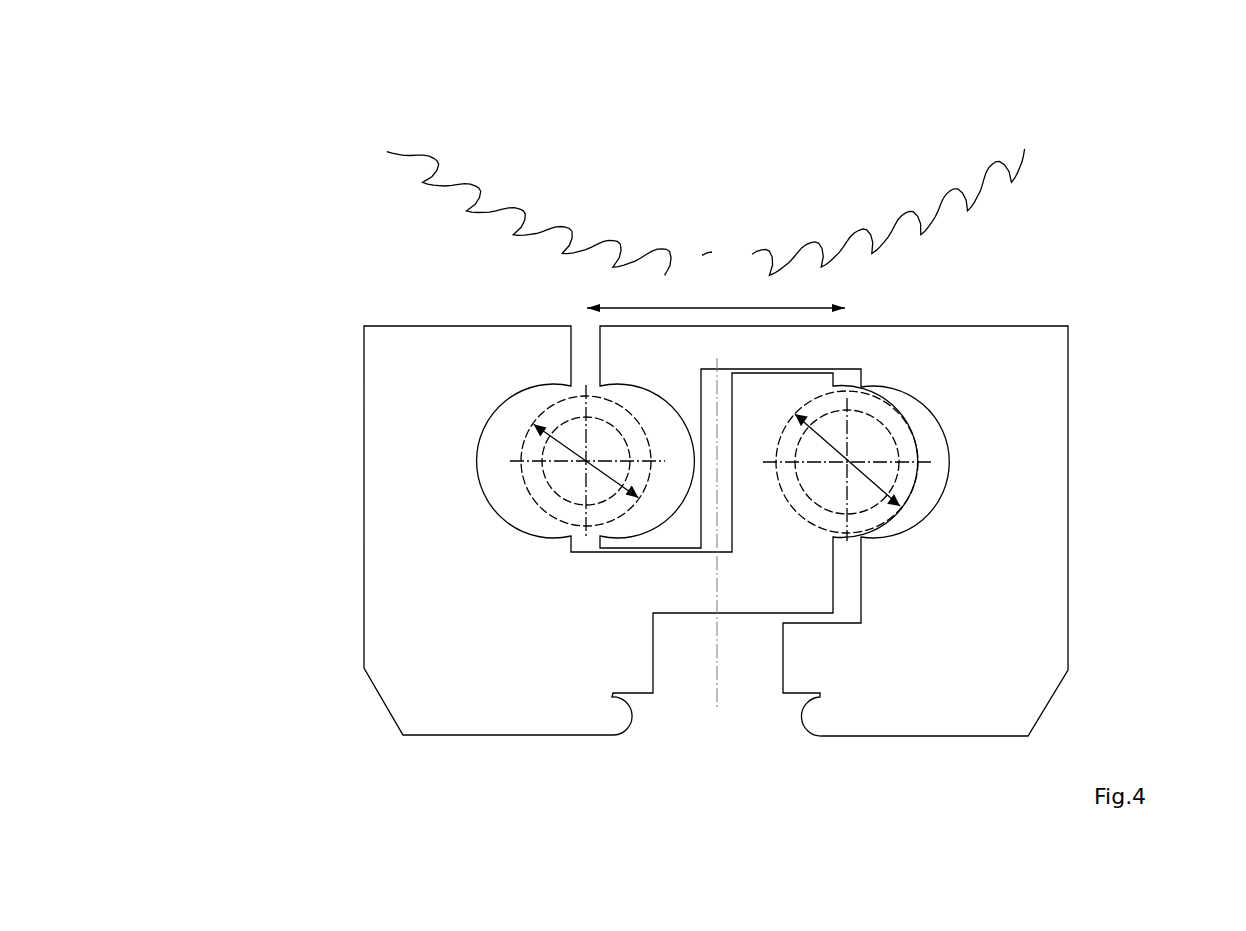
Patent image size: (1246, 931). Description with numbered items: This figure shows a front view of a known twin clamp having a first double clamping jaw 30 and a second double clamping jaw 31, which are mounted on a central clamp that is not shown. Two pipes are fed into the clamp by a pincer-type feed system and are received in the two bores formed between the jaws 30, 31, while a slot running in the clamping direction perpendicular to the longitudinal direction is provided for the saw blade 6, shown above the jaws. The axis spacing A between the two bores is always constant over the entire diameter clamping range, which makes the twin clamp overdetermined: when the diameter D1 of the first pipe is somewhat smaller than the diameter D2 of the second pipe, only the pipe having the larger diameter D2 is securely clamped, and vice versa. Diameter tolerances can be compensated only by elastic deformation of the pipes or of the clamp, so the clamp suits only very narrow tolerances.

The saw blade 6 is at (898, 119).
The first double clamping jaw 30 is at (403, 628).
The second double clamping jaw 31 is at (1025, 541).
The diameter of the first pipe D1 is at (563, 448).
The diameter of the second pipe D2 is at (828, 440).
The axis spacing A is at (716, 289).